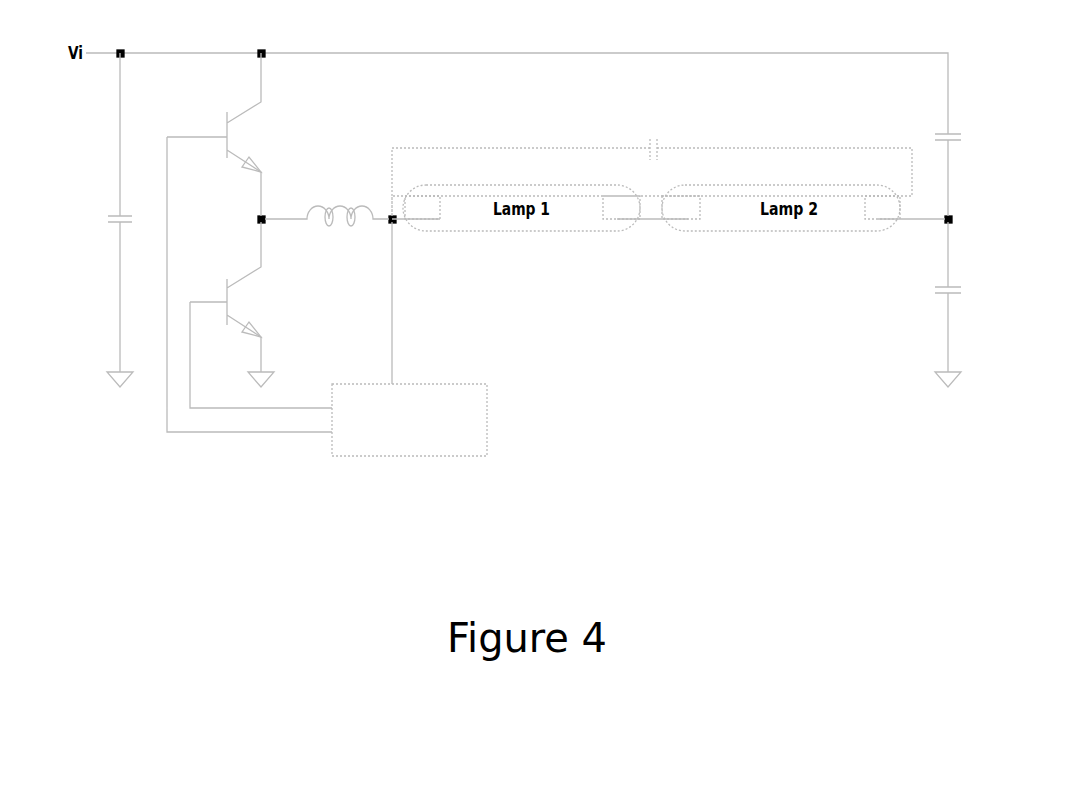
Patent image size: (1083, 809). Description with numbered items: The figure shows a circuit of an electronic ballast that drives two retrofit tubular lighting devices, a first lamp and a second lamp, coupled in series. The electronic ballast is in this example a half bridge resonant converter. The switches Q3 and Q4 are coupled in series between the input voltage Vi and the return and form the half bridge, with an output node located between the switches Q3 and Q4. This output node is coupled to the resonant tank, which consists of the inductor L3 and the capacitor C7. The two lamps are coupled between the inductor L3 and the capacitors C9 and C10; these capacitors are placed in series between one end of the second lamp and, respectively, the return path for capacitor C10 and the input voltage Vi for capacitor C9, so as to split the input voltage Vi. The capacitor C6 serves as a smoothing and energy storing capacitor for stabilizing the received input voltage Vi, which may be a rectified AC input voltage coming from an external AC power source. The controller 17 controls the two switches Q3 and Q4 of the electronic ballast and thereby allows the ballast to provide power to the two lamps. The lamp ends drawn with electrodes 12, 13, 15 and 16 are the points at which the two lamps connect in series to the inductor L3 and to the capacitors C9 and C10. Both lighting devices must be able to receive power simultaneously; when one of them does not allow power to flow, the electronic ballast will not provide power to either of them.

The first electrode of lamp 1 12 is at (428, 207).
The second electrode of lamp 1 13 is at (635, 207).
The first electrode of lamp 2 15 is at (693, 207).
The second electrode of lamp 2 16 is at (892, 207).
The controller 17 is at (409, 420).
The capacitor C6 is at (127, 220).
The capacitor C7 is at (652, 167).
The capacitor C9 is at (955, 162).
The capacitor C10 is at (959, 304).
The inductor L3 is at (327, 206).
The switch Q3 is at (234, 304).
The switch Q4 is at (222, 134).